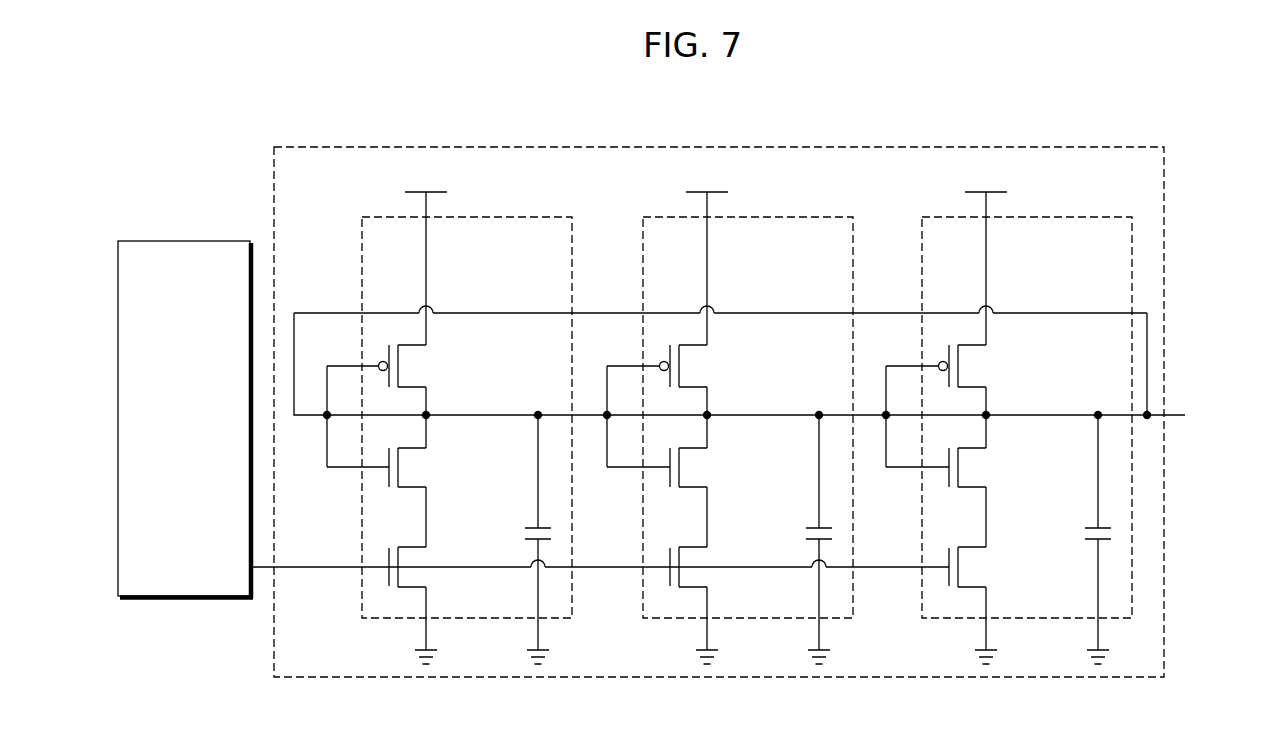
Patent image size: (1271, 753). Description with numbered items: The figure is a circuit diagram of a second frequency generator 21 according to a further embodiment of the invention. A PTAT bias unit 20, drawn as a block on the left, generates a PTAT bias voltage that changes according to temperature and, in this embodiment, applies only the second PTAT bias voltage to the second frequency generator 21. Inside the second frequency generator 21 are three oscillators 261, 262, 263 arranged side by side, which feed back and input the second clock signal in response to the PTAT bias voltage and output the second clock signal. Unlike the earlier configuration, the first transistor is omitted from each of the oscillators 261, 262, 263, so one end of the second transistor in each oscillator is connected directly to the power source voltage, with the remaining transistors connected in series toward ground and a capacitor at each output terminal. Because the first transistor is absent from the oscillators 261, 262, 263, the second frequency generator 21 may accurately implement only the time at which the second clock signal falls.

The PTAT bias unit 20 is at (212, 241).
The second frequency generator 21 is at (630, 147).
The oscillator 261 is at (517, 217).
The oscillator 262 is at (800, 217).
The oscillator 263 is at (1079, 217).